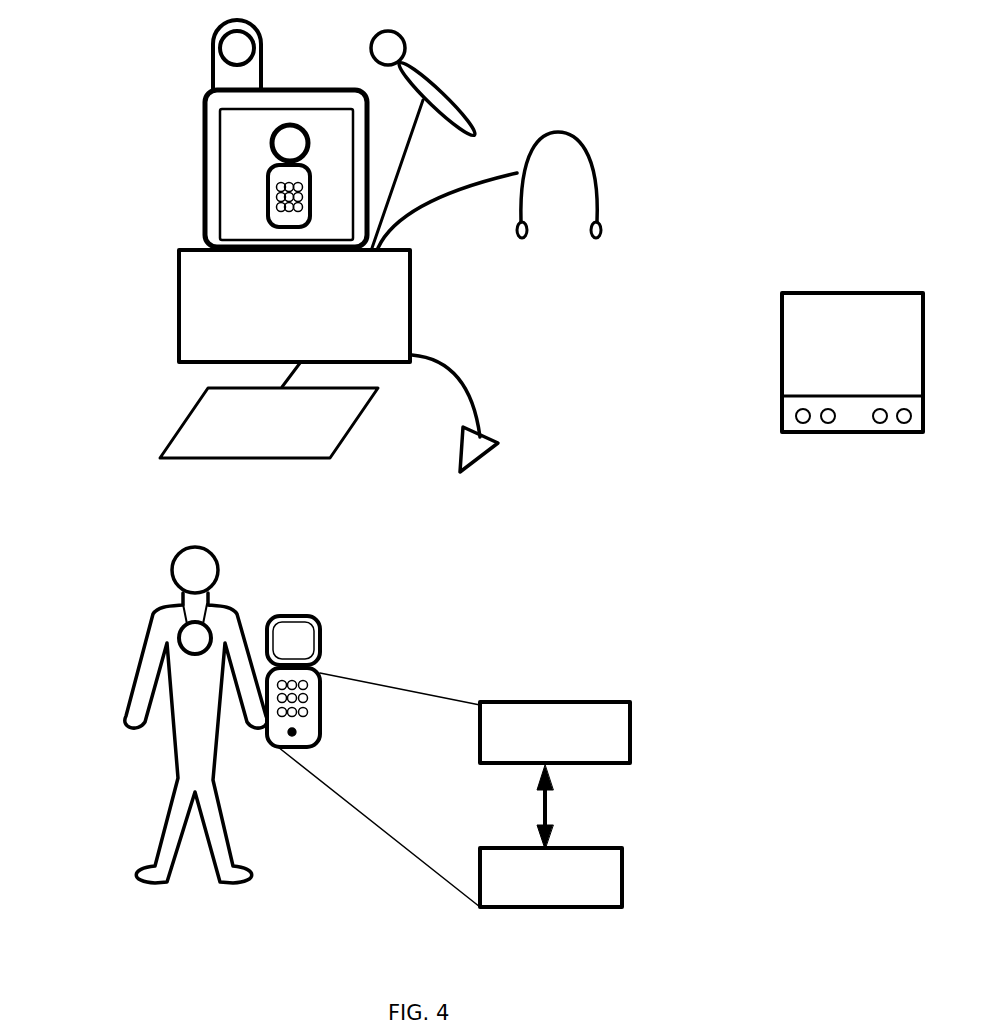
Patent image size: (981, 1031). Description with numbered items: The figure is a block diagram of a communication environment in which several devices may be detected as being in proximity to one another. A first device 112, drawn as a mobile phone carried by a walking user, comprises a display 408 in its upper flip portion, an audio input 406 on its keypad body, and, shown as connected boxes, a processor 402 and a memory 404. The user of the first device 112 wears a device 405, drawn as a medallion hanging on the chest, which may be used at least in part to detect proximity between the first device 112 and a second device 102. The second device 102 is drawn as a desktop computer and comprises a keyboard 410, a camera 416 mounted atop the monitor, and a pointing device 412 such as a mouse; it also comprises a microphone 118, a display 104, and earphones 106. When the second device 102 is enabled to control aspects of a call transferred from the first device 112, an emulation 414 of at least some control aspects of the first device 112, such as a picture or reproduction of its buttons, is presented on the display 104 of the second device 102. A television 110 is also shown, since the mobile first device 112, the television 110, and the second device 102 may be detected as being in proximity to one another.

The second device 102 is at (178, 315).
The display 104 is at (202, 180).
The earphones 106 is at (590, 157).
The television 110 is at (780, 378).
The first device 112 is at (329, 658).
The microphone 118 is at (447, 90).
The processor 402 is at (537, 699).
The memory 404 is at (550, 910).
The wearable device 405 is at (182, 630).
The audio input 406 is at (296, 731).
The display 408 is at (293, 630).
The keyboard 410 is at (198, 430).
The pointing device 412 is at (475, 448).
The emulation 414 is at (267, 210).
The camera 416 is at (223, 68).